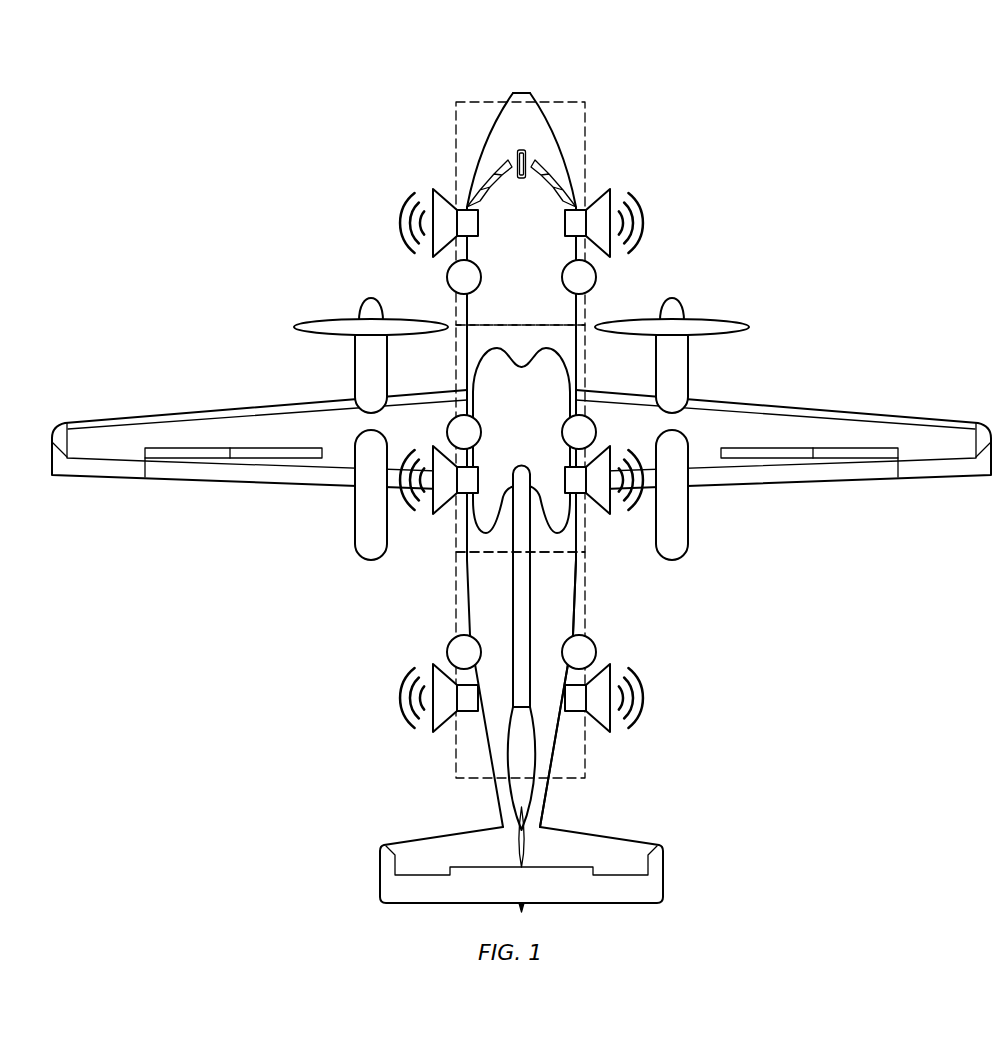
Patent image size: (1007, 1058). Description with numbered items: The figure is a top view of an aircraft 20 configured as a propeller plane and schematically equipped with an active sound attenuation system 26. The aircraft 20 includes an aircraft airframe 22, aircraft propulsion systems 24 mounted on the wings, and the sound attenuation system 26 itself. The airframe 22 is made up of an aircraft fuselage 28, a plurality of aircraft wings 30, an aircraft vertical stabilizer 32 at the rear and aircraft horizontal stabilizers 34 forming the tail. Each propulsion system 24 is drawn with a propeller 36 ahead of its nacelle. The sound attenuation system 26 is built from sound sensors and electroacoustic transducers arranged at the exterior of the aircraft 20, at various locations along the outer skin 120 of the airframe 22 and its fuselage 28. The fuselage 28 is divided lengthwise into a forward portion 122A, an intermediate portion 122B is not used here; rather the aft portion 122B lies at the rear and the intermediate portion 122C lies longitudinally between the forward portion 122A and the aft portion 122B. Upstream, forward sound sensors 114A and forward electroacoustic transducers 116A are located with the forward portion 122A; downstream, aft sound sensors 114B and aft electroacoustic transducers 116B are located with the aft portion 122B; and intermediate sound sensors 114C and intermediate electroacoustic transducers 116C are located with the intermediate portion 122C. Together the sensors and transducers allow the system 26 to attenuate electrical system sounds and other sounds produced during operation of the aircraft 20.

The aircraft 20 is at (635, 477).
The aircraft airframe 22 is at (545, 108).
The aircraft propulsion system 24 is at (280, 308).
The sound attenuation system 26 is at (663, 195).
The aircraft fuselage 28 is at (487, 136).
The aircraft wings 30 is at (155, 410).
The aircraft vertical stabilizer 32 is at (533, 790).
The aircraft horizontal stabilizer 34 is at (410, 842).
The propeller 36 is at (315, 320).
The forward sound sensor 114A is at (447, 280).
The aft sound sensor 114B is at (447, 652).
The intermediate sound sensor 114C is at (447, 432).
The forward electroacoustic transducer 116A is at (539, 191).
The aft electroacoustic transducer 116B is at (433, 728).
The intermediate electroacoustic transducer 116C is at (432, 512).
The outer skin 120 is at (578, 597).
The forward portion 122A is at (585, 110).
The aft portion 122B is at (585, 755).
The intermediate portion 122C is at (585, 355).